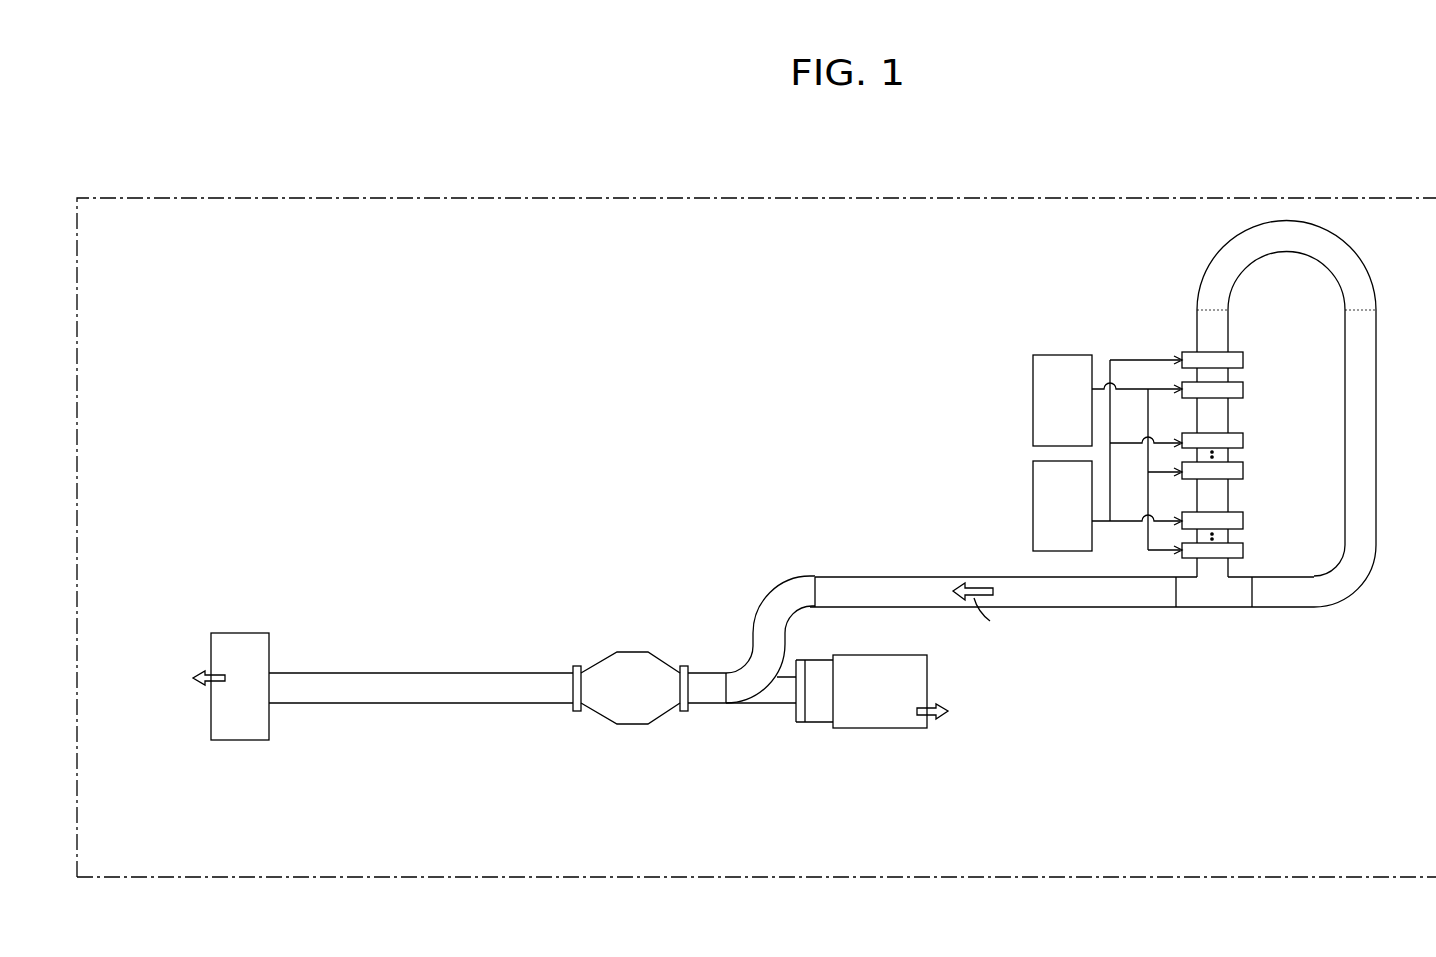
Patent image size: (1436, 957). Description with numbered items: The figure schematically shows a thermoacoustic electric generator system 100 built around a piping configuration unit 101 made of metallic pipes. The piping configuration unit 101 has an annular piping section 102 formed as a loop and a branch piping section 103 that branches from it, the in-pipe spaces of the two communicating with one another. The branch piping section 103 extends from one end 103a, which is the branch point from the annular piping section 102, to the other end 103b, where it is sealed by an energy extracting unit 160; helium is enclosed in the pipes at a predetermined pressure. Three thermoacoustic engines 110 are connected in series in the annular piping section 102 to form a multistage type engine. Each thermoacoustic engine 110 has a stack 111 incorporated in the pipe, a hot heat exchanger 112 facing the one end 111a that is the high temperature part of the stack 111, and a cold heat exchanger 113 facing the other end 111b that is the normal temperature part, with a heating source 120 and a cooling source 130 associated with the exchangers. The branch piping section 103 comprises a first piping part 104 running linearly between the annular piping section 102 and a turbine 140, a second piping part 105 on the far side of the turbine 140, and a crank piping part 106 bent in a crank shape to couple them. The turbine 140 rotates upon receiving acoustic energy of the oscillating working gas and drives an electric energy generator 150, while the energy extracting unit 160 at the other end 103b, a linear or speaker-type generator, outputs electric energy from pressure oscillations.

The thermoacoustic electric generator system 100 is at (378, 198).
The piping configuration unit 101 is at (852, 494).
The annular piping section 102 is at (1378, 387).
The branch piping section 103 is at (1062, 622).
The one end 103a is at (1167, 598).
The the other end 103b is at (281, 695).
The first piping part 104 is at (905, 583).
The second piping part 105 is at (421, 694).
The crank piping part 106 is at (758, 619).
The thermoacoustic engine 110 is at (1216, 438).
The stack 111 is at (1194, 425).
The one end 111a is at (1213, 378).
The the other end 111b is at (1213, 372).
The hot heat exchanger 112 is at (1233, 392).
The cold heat exchanger 113 is at (1237, 355).
The heating source 120 is at (1031, 411).
The cooling source 130 is at (1030, 510).
The turbine 140 is at (600, 664).
The electric energy generator 150 is at (864, 731).
The energy extracting unit 160 is at (249, 630).